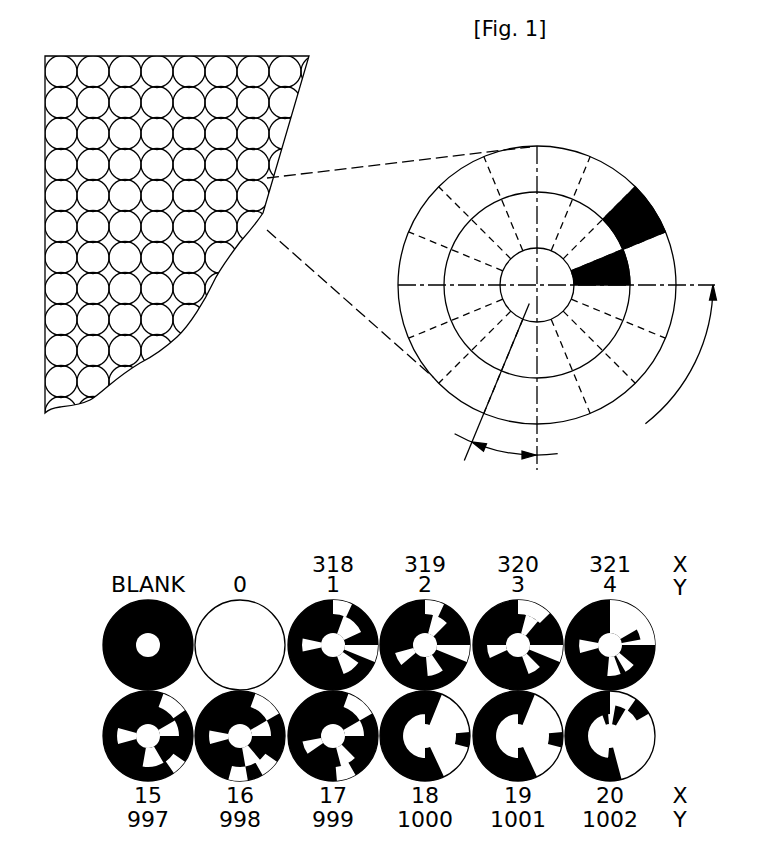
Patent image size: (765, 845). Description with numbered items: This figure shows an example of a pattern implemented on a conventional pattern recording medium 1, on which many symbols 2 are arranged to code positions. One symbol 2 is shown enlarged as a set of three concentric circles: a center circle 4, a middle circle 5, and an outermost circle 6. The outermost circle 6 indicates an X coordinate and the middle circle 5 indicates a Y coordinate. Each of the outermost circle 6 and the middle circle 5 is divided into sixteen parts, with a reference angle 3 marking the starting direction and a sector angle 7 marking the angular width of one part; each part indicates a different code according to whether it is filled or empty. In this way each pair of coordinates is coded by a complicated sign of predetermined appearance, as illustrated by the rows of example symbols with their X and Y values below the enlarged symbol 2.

The sheet with array of circular marks 1 is at (176, 336).
The circular mark 2 is at (515, 144).
The reference angle 3 is at (680, 354).
The center circle 4 is at (533, 302).
The inner ring 5 is at (525, 353).
The outer ring 6 is at (605, 187).
The sector angle 7 is at (506, 398).